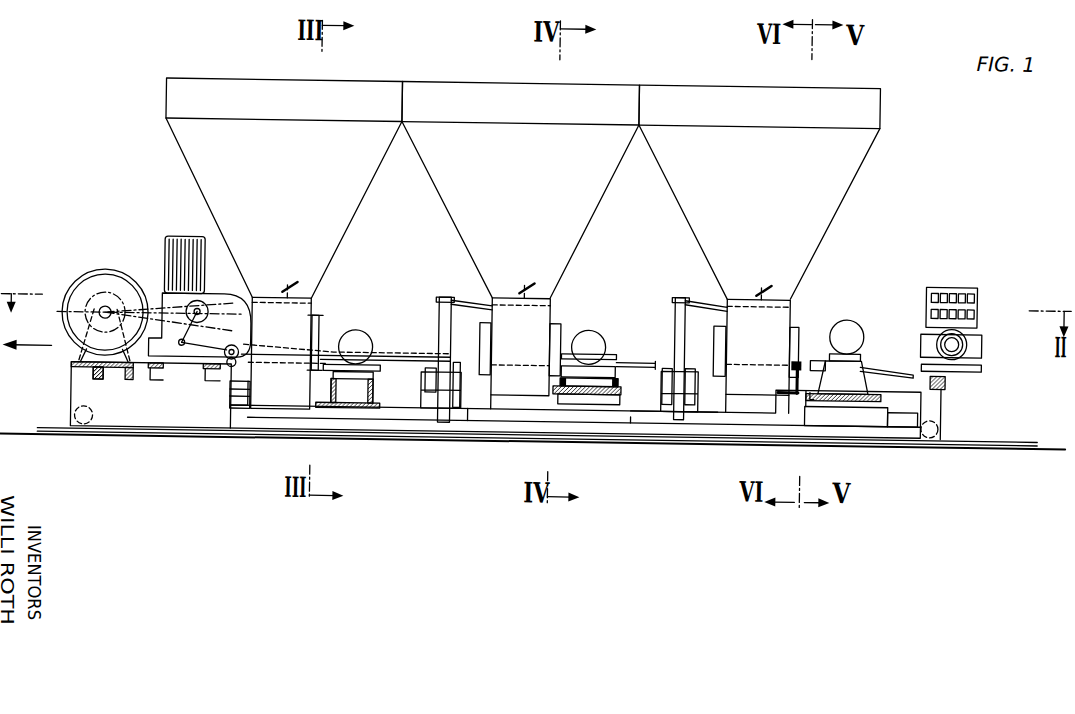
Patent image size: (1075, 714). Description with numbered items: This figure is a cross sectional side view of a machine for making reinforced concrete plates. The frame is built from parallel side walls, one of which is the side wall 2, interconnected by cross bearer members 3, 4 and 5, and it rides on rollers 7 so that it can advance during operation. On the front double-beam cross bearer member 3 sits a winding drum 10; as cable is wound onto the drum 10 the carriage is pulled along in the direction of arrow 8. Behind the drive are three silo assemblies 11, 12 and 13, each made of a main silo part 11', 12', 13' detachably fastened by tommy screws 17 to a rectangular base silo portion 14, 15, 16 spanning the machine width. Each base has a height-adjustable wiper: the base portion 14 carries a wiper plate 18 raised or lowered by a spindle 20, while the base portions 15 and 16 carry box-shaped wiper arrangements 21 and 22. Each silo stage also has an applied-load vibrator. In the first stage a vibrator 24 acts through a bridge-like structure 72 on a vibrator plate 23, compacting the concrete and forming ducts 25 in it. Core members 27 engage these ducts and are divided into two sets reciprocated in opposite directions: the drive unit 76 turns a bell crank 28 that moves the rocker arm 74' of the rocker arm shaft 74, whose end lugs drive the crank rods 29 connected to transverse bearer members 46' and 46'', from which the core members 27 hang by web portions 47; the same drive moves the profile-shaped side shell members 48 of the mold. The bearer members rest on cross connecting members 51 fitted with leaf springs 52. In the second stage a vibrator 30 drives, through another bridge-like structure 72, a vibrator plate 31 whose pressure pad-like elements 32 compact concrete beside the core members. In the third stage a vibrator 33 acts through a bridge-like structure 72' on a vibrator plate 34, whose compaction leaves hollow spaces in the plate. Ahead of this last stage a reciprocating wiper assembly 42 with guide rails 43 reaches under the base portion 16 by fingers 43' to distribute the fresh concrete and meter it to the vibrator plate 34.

The side wall 2 is at (72, 400).
The cross bearer member 3 is at (72, 369).
The cross bearer member 4 is at (160, 382).
The cross bearer member 5 is at (948, 376).
The rollers 7 is at (80, 432).
The arrow 8 is at (27, 336).
The winding drum 10 is at (92, 288).
The silo assembly 11 is at (285, 86).
The main silo part 11' is at (265, 209).
The silo assembly 12 is at (521, 91).
The main silo part 12' is at (514, 210).
The silo assembly 13 is at (760, 97).
The main silo part 13' is at (750, 213).
The base silo portion 14 is at (262, 420).
The base silo portion 15 is at (478, 416).
The base silo portion 16 is at (730, 395).
The tommy screws 17 is at (295, 282).
The wiper plate 18 is at (300, 409).
The spindle 20 is at (313, 322).
The box-shaped wiper arrangement 21 is at (510, 405).
The box-shaped wiper arrangement 22 is at (760, 393).
The vibrator plate 23 is at (370, 410).
The vibrator 24 is at (358, 334).
The ducts 25 is at (325, 406).
The core members 27 is at (640, 410).
The bell crank 28 is at (208, 320).
The crank rod 29 is at (402, 350).
The vibrator 30 is at (592, 323).
The vibrator plate 31 is at (550, 400).
The pressure pad-like vibrator elements 32 is at (600, 399).
The vibrator 33 is at (850, 312).
The vibrator plate 34 is at (858, 395).
The wiper assembly 42 is at (818, 397).
The guide rails 43 is at (800, 342).
The fingers 43' is at (785, 437).
The transverse bearer member 46' is at (530, 367).
The transverse bearer member 46'' is at (582, 367).
The web portions 47 is at (455, 412).
The side shell members 48 is at (275, 421).
The cross connecting members 51 is at (443, 292).
The leaf springs 52 is at (440, 300).
The bridge-like structure 72 is at (468, 431).
The bridge-like structure 72' is at (882, 338).
The rocker arm shaft 74 is at (256, 339).
The rocker arm 74' is at (217, 325).
The drive unit 76 is at (175, 298).